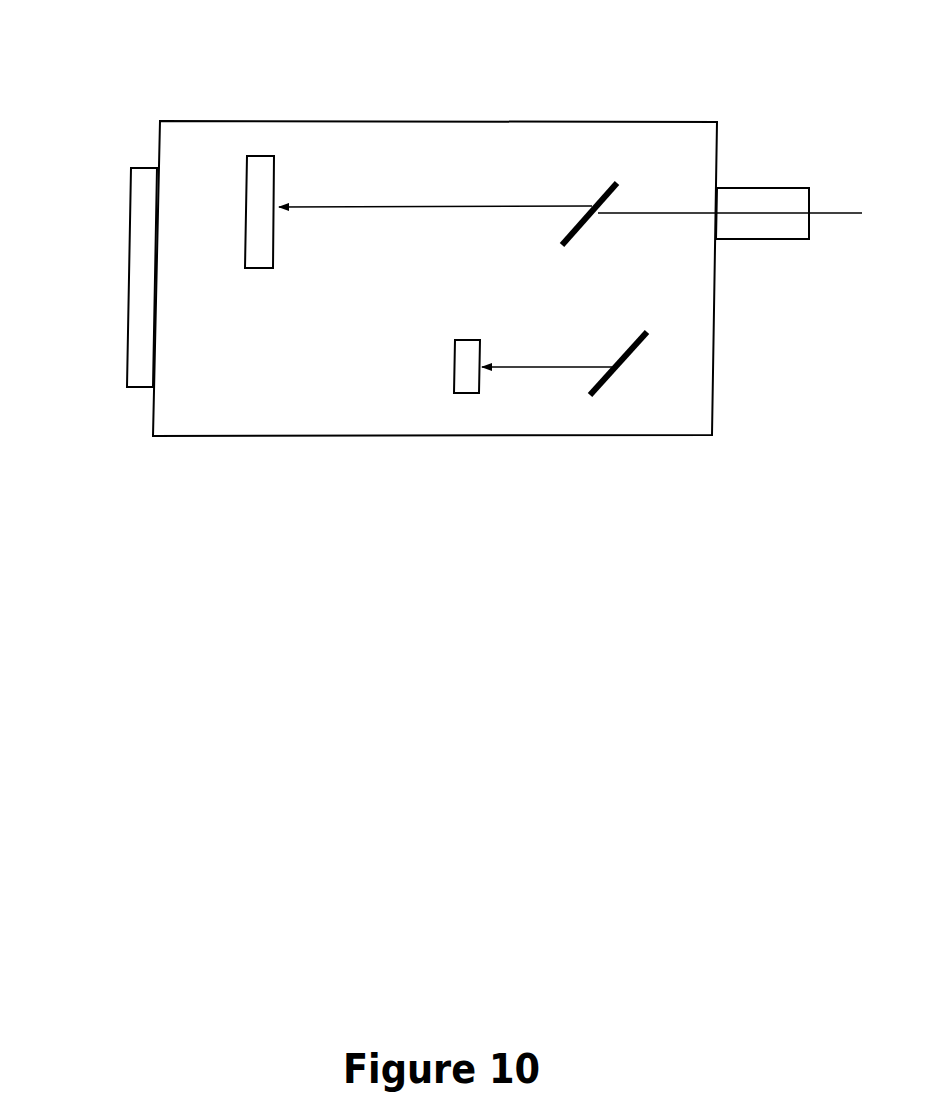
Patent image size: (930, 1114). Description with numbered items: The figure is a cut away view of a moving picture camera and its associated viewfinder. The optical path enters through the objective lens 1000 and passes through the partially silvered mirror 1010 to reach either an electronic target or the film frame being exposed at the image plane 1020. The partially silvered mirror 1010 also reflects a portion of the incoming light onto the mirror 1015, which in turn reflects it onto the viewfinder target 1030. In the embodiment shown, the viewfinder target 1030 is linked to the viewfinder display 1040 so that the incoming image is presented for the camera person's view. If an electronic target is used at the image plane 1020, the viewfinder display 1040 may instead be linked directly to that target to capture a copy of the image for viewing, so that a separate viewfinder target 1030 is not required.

The objective lens 1000 is at (801, 172).
The partially silvered mirror 1010 is at (675, 136).
The mirror 1015 is at (746, 363).
The electronic target or film frame being exposed 1020 is at (393, 143).
The viewfinder target 1030 is at (458, 445).
The viewfinder display 1040 is at (120, 197).